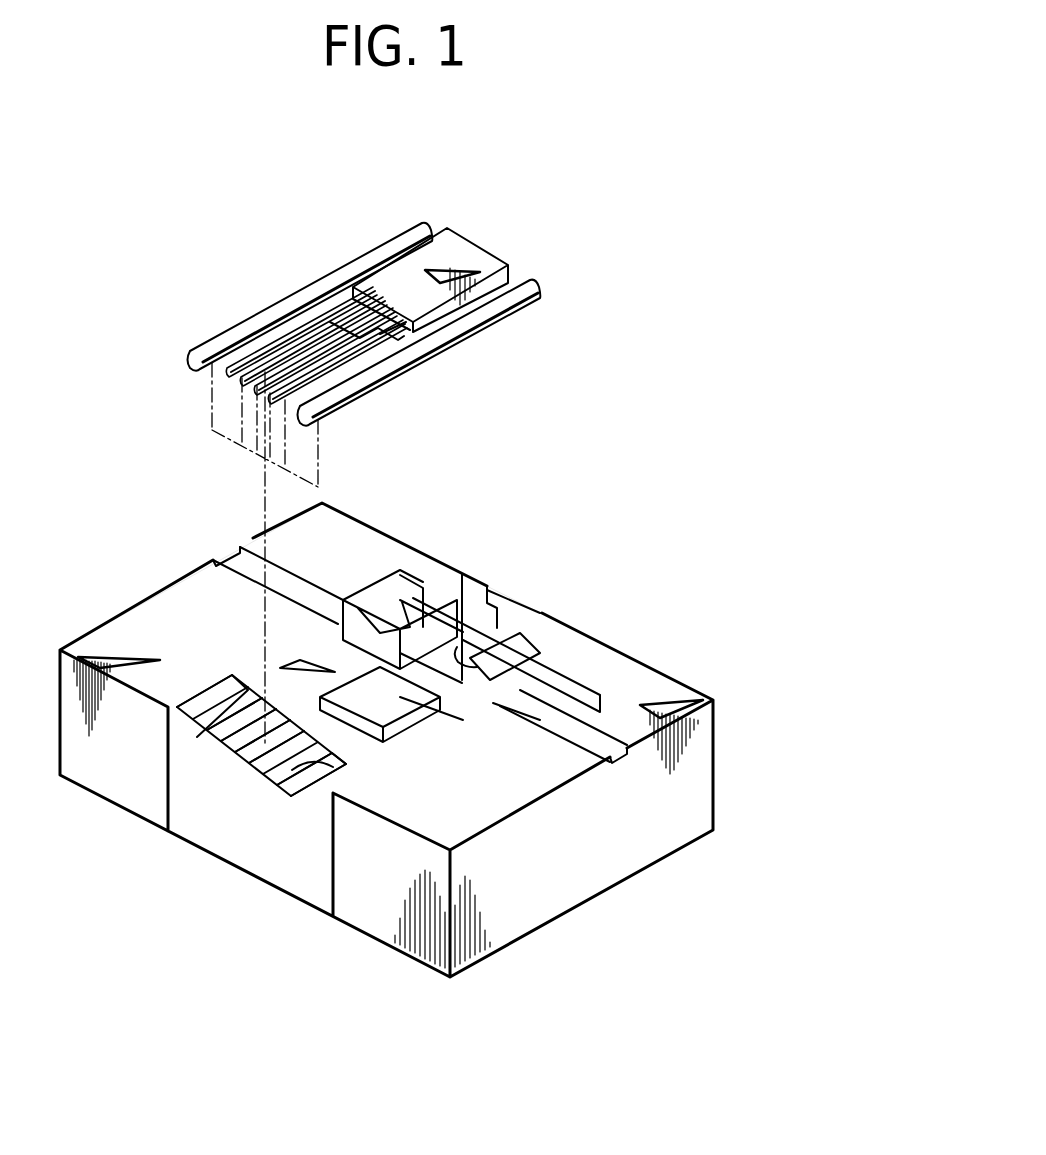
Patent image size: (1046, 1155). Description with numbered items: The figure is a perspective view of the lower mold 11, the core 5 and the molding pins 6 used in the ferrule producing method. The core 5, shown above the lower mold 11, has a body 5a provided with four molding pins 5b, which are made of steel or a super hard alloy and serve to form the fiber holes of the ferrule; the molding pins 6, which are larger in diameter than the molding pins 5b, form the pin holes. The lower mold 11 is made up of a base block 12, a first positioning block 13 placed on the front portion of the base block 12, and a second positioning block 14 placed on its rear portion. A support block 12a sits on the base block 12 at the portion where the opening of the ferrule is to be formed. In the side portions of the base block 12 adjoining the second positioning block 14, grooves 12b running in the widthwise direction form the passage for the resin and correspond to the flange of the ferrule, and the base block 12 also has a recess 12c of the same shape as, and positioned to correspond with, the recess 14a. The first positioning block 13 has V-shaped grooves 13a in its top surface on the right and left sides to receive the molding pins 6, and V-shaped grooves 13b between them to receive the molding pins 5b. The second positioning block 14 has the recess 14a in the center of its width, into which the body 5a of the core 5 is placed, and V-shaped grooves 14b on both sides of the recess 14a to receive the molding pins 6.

The core 5 is at (393, 303).
The body 5a is at (450, 247).
The molding pins 5b is at (277, 313).
The molding pins 6 is at (362, 250).
The lower mold 11 is at (614, 543).
The base block 12 is at (588, 905).
The support block 12a is at (392, 690).
The grooves 12b is at (245, 562).
The recess 12c is at (500, 618).
The first positioning block 13 is at (180, 852).
The V-shaped grooves 13a is at (177, 712).
The V-shaped grooves 13b is at (243, 757).
The second positioning block 14 is at (569, 688).
The recess 14a is at (550, 647).
The V-shaped grooves 14b is at (405, 600).